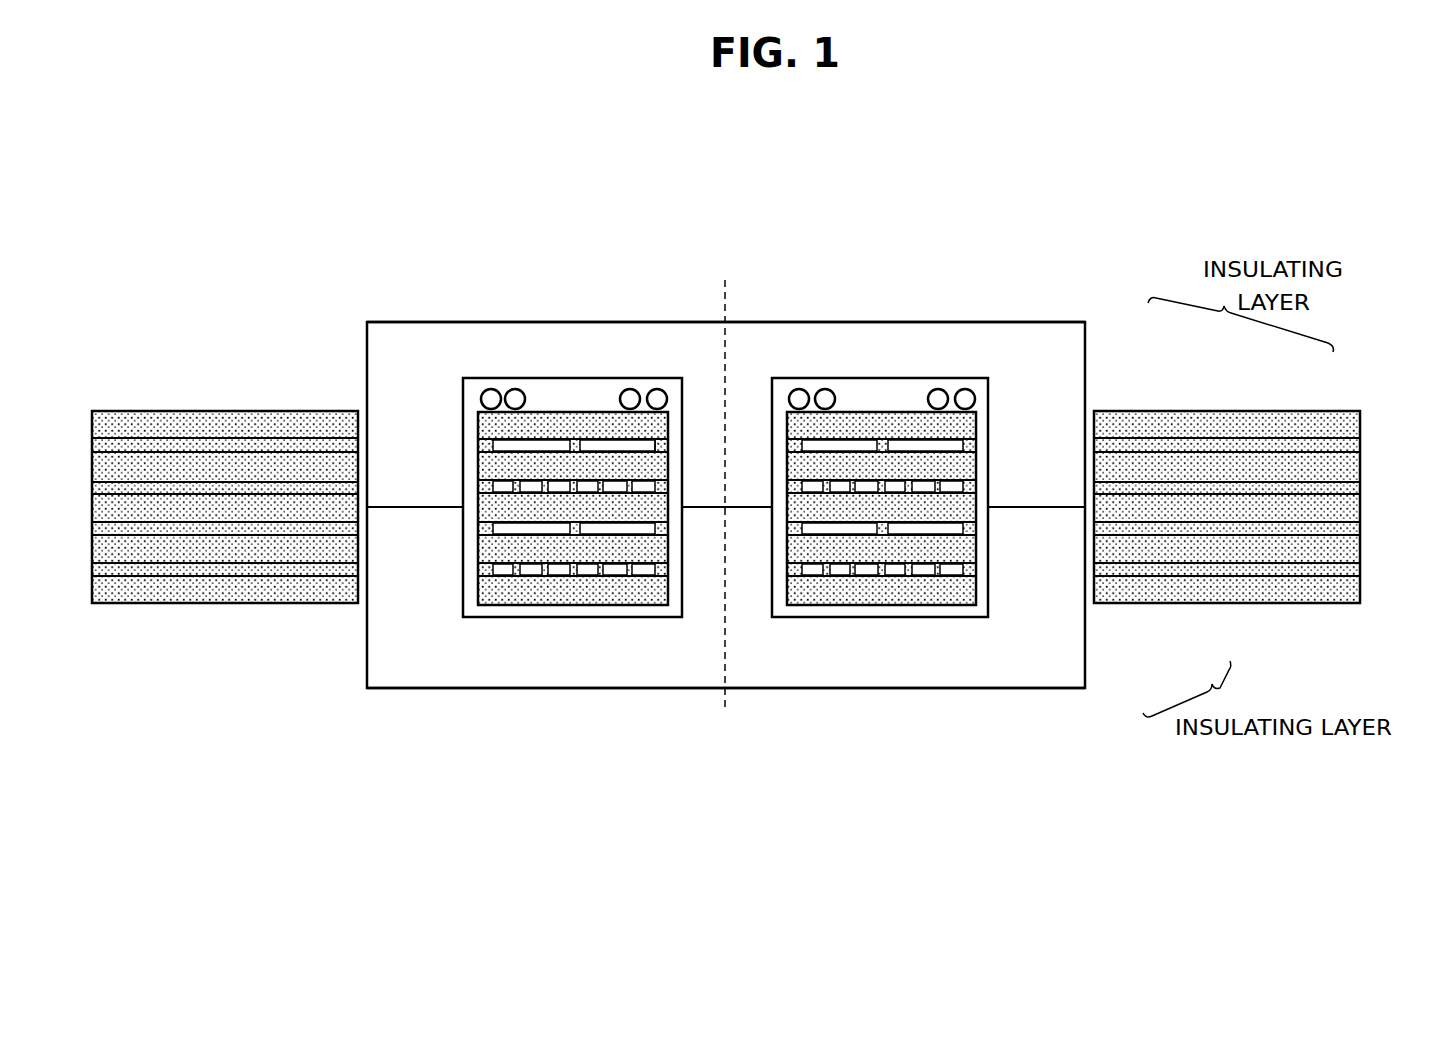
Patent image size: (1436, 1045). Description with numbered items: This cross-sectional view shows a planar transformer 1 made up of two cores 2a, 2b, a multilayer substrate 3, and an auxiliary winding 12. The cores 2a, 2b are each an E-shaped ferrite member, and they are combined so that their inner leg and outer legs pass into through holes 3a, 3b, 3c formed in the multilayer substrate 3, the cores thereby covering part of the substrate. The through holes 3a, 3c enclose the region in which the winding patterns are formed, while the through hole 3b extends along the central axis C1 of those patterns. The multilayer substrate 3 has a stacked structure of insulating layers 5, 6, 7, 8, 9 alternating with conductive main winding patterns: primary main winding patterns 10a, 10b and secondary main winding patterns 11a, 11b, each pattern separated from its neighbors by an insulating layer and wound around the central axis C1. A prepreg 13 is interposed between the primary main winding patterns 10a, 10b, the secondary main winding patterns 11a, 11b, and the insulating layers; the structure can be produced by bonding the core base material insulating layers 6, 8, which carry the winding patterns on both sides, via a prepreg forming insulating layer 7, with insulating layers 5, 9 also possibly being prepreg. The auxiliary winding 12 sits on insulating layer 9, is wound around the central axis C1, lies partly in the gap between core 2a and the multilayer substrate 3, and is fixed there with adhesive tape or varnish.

The planar transformer 1 is at (1320, 175).
The core 2a is at (397, 322).
The core 2b is at (386, 690).
The multilayer substrate 3 is at (642, 548).
The through hole 3a is at (362, 405).
The through hole 3b is at (779, 404).
The through hole 3c is at (1091, 404).
The insulating layer 5 is at (1110, 590).
The insulating layer 6 is at (1140, 555).
The insulating layer 7 is at (1220, 510).
The insulating layer 8 is at (1155, 470).
The insulating layer 9 is at (1122, 425).
The primary main winding pattern 10a is at (500, 578).
The primary main winding pattern 10b is at (588, 490).
The secondary main winding pattern 11a is at (552, 530).
The secondary main winding pattern 11b is at (617, 445).
The auxiliary winding 12 is at (492, 386).
The prepreg 13 is at (665, 438).
The central axis C1 is at (728, 480).